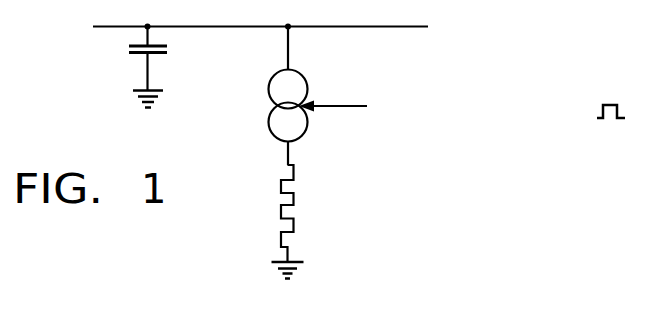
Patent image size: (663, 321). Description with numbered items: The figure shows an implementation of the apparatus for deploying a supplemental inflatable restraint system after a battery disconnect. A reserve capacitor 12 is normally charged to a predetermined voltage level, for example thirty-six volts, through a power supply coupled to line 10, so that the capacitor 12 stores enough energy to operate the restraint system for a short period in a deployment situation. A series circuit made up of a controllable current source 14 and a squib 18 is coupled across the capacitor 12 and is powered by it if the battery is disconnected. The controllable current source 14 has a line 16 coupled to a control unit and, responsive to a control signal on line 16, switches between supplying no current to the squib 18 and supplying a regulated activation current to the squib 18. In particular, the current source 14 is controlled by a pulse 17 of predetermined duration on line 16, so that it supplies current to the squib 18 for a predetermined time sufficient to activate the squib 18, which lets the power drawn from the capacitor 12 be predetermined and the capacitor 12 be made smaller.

The line 10 is at (110, 28).
The reserve capacitor 12 is at (155, 57).
The controllable current source 14 is at (278, 107).
The line 16 is at (328, 108).
The pulse 17 is at (612, 103).
The squib 18 is at (294, 199).